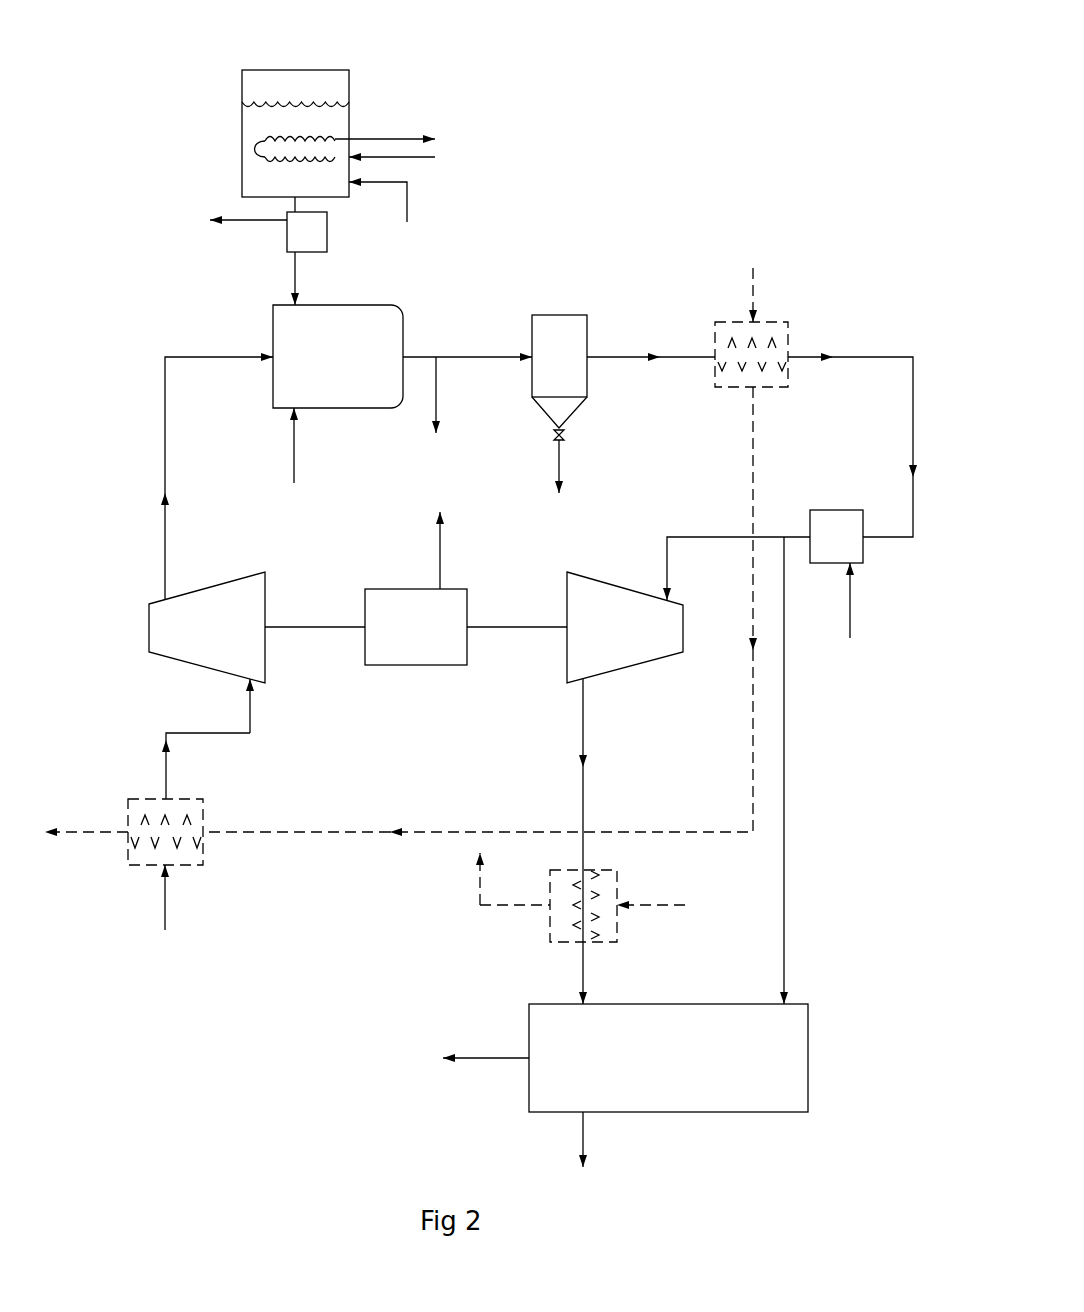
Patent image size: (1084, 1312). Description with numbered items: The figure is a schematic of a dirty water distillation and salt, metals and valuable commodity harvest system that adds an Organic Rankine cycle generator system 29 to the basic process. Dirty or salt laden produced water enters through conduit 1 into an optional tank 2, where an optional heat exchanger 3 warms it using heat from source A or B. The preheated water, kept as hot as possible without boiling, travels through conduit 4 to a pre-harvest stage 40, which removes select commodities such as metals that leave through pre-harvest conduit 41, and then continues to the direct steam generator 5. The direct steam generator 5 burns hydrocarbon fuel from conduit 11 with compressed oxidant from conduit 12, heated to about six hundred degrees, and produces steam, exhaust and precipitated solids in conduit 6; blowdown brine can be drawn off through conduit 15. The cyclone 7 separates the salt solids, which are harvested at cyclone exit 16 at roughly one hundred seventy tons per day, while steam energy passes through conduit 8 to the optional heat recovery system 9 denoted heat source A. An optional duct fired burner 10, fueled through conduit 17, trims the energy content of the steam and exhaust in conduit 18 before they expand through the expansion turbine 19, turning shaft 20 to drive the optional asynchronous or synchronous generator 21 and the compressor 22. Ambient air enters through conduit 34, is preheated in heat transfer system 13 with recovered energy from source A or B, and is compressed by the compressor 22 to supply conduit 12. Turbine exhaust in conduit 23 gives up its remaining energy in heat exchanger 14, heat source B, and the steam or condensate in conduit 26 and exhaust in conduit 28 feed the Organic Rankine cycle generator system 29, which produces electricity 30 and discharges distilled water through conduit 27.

The conduit 1 is at (407, 208).
The tank 2 is at (352, 82).
The heat exchanger 3 is at (393, 137).
The conduit 4 is at (293, 255).
The direct steam generator 5 is at (342, 305).
The conduit 6 is at (455, 357).
The cyclone 7 is at (587, 335).
The conduit 8 is at (627, 357).
The heat recovery system 9 is at (788, 322).
The duct fired burner 10 is at (828, 510).
The conduit 11 is at (294, 453).
The conduit 12 is at (165, 452).
The heat transfer system 13 is at (203, 799).
The heat exchanger 14 is at (617, 925).
The conduit 15 is at (438, 412).
The cyclone exit 16 is at (562, 459).
The conduit 17 is at (852, 607).
The conduit 18 is at (715, 537).
The expansion turbine 19 is at (628, 667).
The shaft 20 is at (490, 627).
The asynchronous or synchronous generator 21 is at (393, 589).
The compressor 22 is at (207, 588).
The conduit 23 is at (584, 731).
The conduit 26 is at (582, 960).
The conduit 27 is at (626, 1160).
The conduit 28 is at (785, 797).
The Organic Rankine cycle generator system 29 is at (808, 1048).
The electricity 30 is at (497, 1058).
The conduit 34 is at (167, 903).
The pre-harvest stage 40 is at (327, 240).
The pre-harvest conduit 41 is at (240, 218).